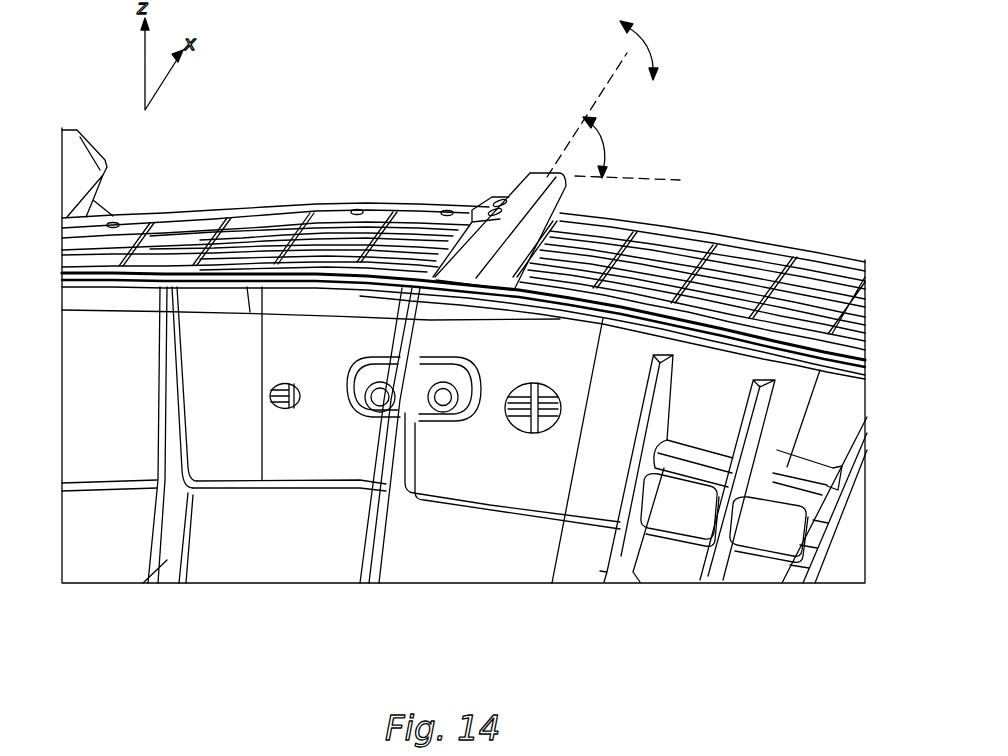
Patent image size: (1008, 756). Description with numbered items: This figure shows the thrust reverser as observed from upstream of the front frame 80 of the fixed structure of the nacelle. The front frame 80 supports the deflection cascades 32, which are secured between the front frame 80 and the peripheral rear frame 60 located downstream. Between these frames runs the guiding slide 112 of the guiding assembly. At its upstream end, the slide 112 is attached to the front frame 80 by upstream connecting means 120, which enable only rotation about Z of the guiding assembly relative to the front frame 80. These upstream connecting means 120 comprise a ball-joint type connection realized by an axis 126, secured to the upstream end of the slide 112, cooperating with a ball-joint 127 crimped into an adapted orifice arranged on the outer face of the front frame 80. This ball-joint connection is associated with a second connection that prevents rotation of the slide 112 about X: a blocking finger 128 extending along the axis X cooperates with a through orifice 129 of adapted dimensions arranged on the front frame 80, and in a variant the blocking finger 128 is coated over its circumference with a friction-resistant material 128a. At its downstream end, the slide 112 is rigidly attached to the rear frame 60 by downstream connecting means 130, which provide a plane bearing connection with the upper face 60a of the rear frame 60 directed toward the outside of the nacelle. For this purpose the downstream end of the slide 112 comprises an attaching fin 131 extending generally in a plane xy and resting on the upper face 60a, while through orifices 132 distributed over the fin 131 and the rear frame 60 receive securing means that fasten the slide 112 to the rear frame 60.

The downstream connecting means 130 is at (535, 179).
The attaching fin 131 is at (482, 193).
The through orifice 132 is at (560, 198).
The guiding slide 112 is at (527, 208).
The upper face of the rear frame 60a is at (748, 246).
The rear frame 60 is at (490, 275).
The deflection cascades 32 is at (828, 308).
The front frame 80 is at (832, 408).
The ball-joint 127 is at (205, 495).
The axis 126 is at (373, 401).
The upstream connecting means 120 is at (397, 452).
The through orifice 129 is at (428, 416).
The blocking finger 128 is at (450, 521).
The friction-resistant material 128a is at (466, 402).